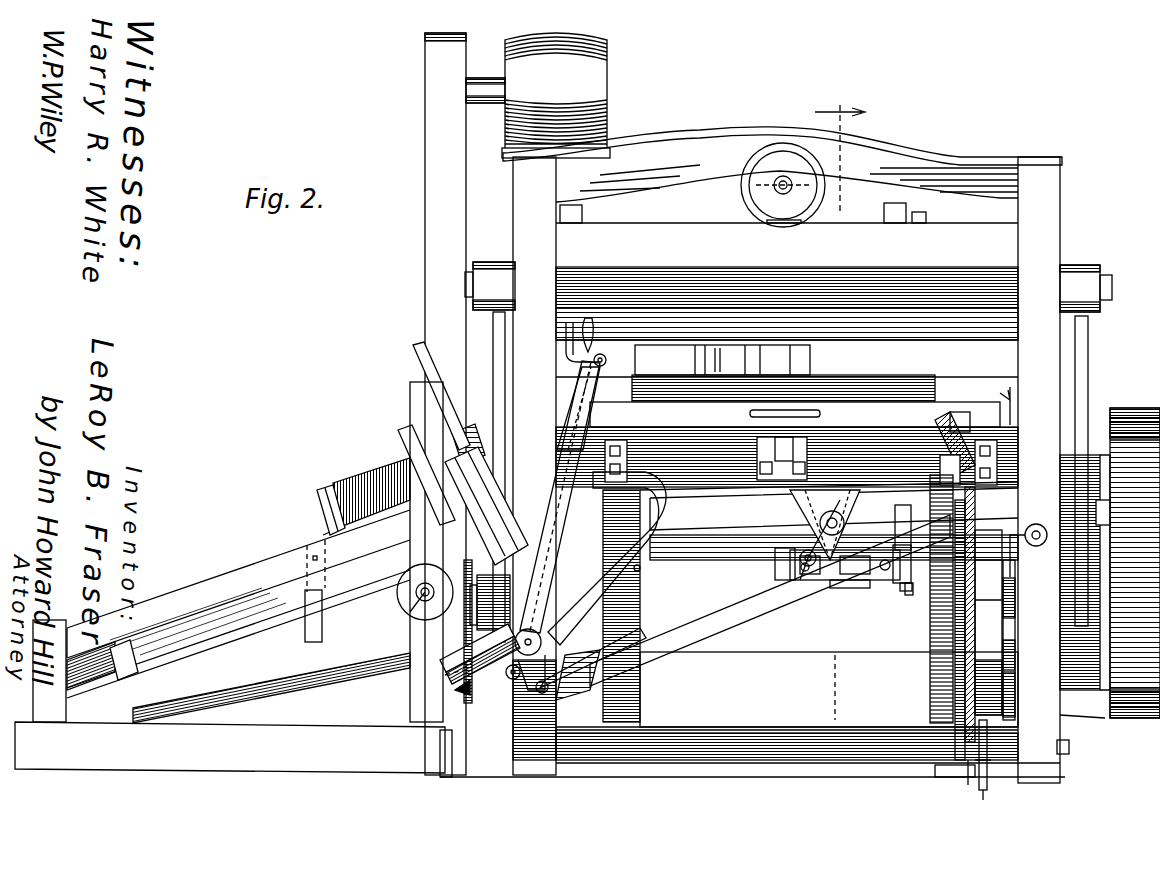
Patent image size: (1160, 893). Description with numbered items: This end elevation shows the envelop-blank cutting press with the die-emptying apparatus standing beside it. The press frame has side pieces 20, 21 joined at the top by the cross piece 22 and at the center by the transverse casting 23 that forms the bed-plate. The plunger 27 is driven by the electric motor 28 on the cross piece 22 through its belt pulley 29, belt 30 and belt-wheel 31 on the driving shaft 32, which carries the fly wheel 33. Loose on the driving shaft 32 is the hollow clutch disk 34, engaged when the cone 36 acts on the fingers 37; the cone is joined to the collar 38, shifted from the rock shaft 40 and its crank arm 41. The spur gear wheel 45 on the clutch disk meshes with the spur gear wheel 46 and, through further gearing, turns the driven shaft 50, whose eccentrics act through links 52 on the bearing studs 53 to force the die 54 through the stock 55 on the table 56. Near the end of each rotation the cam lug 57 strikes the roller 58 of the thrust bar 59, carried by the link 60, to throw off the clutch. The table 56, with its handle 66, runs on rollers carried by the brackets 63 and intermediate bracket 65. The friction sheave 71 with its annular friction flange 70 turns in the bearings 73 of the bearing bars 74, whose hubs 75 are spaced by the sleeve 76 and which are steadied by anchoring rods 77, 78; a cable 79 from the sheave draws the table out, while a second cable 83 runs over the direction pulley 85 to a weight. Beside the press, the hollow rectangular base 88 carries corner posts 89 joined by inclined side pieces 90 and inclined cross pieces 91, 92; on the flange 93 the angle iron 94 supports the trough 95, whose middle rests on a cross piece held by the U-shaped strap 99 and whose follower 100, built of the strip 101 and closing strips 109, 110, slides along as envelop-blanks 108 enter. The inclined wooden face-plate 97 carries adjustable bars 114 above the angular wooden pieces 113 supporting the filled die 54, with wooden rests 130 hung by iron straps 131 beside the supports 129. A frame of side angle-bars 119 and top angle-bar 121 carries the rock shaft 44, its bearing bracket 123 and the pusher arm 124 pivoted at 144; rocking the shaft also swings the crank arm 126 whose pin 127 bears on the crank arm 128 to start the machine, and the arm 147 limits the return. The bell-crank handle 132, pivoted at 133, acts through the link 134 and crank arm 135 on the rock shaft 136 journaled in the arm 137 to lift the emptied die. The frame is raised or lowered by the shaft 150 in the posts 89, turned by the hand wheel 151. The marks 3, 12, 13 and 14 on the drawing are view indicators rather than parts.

The section line 3 is at (840, 147).
The rail 12 is at (690, 656).
The fork lever 13 is at (598, 330).
The arrow 14 is at (1009, 397).
The side piece 20 is at (513, 208).
The side piece 21 is at (1062, 214).
The cross piece 22 is at (920, 150).
The transverse casting 23 is at (787, 574).
The plunger 27 is at (787, 287).
The electric motor 28 is at (612, 78).
The belt pulley 29 is at (425, 90).
The belt 30 is at (425, 182).
The belt-wheel 31 is at (445, 695).
The driving shaft 32 is at (1125, 540).
The fly wheel 33 is at (1130, 408).
The hollow clutch disk 34 is at (908, 527).
The cone 36 is at (845, 582).
The fingers 37 is at (860, 590).
The collar 38 is at (808, 566).
The rock shaft 40 is at (860, 520).
The crank arm 41 is at (820, 528).
The rock shaft 44 is at (531, 673).
The spur gear wheel 45 is at (1016, 596).
The spur gear wheel 46 is at (1016, 650).
The driven shaft 50 is at (1102, 712).
The links 52 is at (493, 362).
The bearing studs 53 is at (465, 286).
The die 54 is at (462, 432).
The stock 55 is at (882, 398).
The table 56 is at (958, 410).
The cam lug 57 is at (905, 594).
The roller 58 is at (905, 584).
The thrust bar 59 is at (878, 582).
The link 60 is at (905, 525).
The brackets 63 is at (1023, 468).
The intermediate bracket 65 is at (858, 466).
The handle 66 is at (822, 415).
The annular friction flange 70 is at (1015, 680).
The friction sheave 71 is at (1002, 628).
The bearings 73 is at (930, 660).
The bearing bars 74 is at (955, 690).
The hubs 75 is at (945, 774).
The spacing sleeve 76 is at (752, 714).
The anchoring rod 77 is at (1012, 560).
The anchoring rod 78 is at (977, 520).
The rope or cable 79 is at (977, 545).
The second rope or cable 83 is at (1069, 747).
The direction pulley 85 is at (975, 785).
The hollow rectangular base 88 is at (230, 747).
The corner posts 89 is at (33, 660).
The inclined side pieces 90 is at (193, 590).
The inclined cross piece 91 is at (98, 690).
The inclined cross piece 92 is at (133, 670).
The flange 93 is at (140, 668).
The angle iron 94 is at (135, 660).
The trough 95 is at (264, 630).
The inclined wooden face-plate 97 is at (410, 402).
The U-shaped metallic strap 99 is at (322, 612).
The follower 100 is at (325, 484).
The flat metallic strip 101 is at (320, 503).
The envelop-blank 108 is at (370, 478).
The metallic strip 109 is at (337, 564).
The metallic strip 110 is at (325, 530).
The angular wooden pieces 113 is at (486, 506).
The adjustable bars 114 is at (413, 348).
The side angle-bars 119 is at (288, 695).
The top angle-bar 121 is at (455, 655).
The bearing bracket 123 is at (600, 580).
The pusher arm 124 is at (668, 520).
The crank arm 126 is at (518, 652).
The pin 127 is at (509, 680).
The crank arm 128 is at (578, 675).
The supports 129 is at (530, 500).
The wooden rests 130 is at (560, 519).
The iron straps 131 is at (560, 554).
The bell-crank-shaped handle 132 is at (575, 320).
The pivot 133 is at (604, 354).
The link 134 is at (603, 395).
The crank arm 135 is at (490, 602).
The rock shaft 136 is at (668, 635).
The arm 137 is at (593, 658).
The pivot 144 is at (834, 548).
The arm 147 is at (440, 720).
The shaft 150 is at (416, 596).
The hand wheel 151 is at (400, 588).